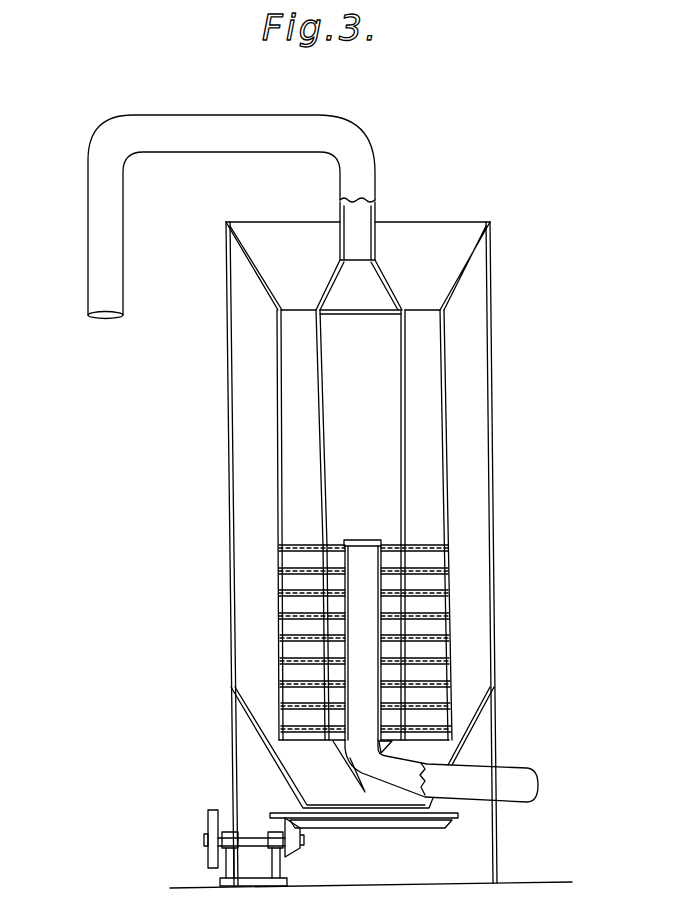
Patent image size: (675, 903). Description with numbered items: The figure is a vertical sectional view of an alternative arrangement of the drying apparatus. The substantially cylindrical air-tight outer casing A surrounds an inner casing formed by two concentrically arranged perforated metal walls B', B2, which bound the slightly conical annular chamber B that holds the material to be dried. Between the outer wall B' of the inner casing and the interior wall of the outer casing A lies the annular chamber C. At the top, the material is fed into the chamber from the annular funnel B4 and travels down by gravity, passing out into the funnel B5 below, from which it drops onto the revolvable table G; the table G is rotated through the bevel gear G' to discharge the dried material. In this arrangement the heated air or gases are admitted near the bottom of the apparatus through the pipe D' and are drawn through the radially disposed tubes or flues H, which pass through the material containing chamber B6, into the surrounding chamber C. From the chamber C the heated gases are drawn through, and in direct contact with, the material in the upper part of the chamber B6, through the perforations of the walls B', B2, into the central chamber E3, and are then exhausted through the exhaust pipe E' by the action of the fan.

The exhaust pipe E' is at (231, 196).
The outer casing A is at (490, 388).
The annular chamber C is at (245, 522).
The annular funnel B4 is at (358, 266).
The perforated metal wall of the inner casing B' is at (361, 525).
The perforated metal wall of the inner casing B2 is at (322, 472).
The material containing chamber B6 is at (285, 470).
The annular chamber B is at (476, 401).
The chamber E3 is at (360, 367).
The radially disposed tubes or flues H is at (395, 548).
The pipe D' is at (451, 759).
The funnel B5 is at (362, 747).
The revolvable table G is at (413, 826).
The bevel gear G' is at (339, 848).